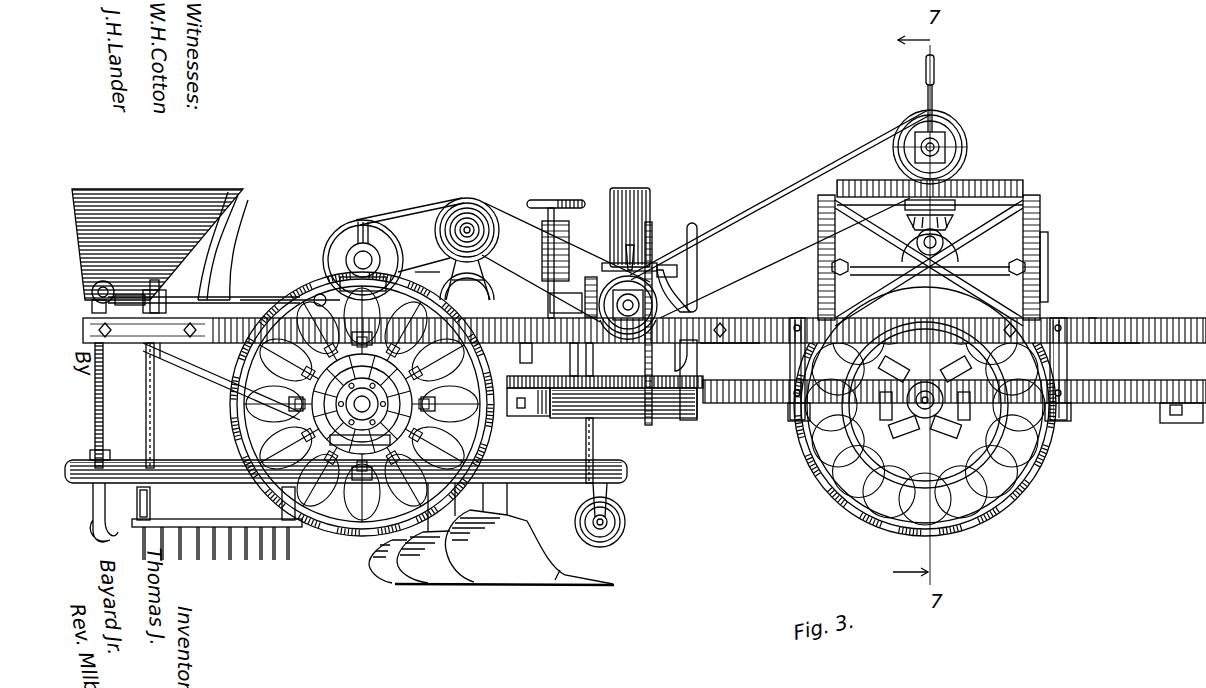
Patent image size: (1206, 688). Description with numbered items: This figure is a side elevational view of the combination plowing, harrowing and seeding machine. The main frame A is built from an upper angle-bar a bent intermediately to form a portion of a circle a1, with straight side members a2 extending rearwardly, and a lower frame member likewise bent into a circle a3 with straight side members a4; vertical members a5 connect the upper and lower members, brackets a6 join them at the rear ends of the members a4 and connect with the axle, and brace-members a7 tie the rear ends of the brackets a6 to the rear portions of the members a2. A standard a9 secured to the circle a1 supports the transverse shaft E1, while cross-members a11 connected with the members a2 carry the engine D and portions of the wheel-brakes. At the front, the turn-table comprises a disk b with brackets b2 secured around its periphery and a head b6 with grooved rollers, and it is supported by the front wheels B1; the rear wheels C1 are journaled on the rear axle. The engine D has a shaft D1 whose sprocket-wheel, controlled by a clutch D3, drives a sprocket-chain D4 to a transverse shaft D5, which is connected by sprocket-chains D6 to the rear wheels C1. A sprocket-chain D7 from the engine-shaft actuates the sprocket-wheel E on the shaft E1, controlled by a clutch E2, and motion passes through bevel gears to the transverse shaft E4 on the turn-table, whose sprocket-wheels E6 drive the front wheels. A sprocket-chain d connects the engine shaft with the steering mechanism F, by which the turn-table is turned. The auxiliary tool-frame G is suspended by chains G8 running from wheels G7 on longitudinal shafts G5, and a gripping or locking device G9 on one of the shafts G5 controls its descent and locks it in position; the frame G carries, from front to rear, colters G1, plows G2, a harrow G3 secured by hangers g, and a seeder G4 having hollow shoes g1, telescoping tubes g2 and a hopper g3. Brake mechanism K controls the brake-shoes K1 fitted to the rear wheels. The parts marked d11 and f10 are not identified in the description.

The main frame A is at (644, 313).
The upper angle-bar a is at (1094, 307).
The circle portion of upper angle-bar a1 is at (1140, 344).
The straight side members of upper frame a2 is at (725, 343).
The circle portion of lower frame member a3 is at (1138, 404).
The straight side members of lower frame a4 is at (735, 404).
The vertical members a5 is at (792, 348).
The brackets a6 is at (300, 432).
The brace-members a7 is at (222, 372).
The standard a9 is at (1044, 242).
The cross-members a11 is at (562, 346).
The disk b is at (932, 417).
The brackets b2 is at (1068, 420).
The head b6 is at (960, 215).
The front wheels B1 is at (840, 500).
The rear wheels C1 is at (348, 528).
The engine D is at (650, 210).
The engine shaft D1 is at (635, 336).
The clutch D3 is at (660, 250).
The sprocket-chain D4 is at (405, 228).
The transverse shaft D5 is at (358, 248).
The sprocket-chains D6 is at (322, 262).
The sprocket-chain D7 is at (790, 194).
The sprocket-chain d is at (525, 244).
The bracket d11 is at (676, 348).
The sprocket-wheel E is at (968, 148).
The transverse shaft E1 is at (902, 124).
The clutch E2 is at (948, 134).
The transverse shaft E4 is at (1040, 262).
The sprocket-wheels E6 is at (939, 235).
The steering mechanism F is at (482, 215).
The lever f10 is at (431, 263).
The auxiliary tool-frame G is at (172, 464).
The colters G1 is at (620, 507).
The plows G2 is at (498, 575).
The harrow G3 is at (258, 560).
The seeder G4 is at (90, 306).
The longitudinal shafts G5 is at (250, 296).
The wheels G7 is at (157, 290).
The chains G8 is at (154, 425).
The gripping or locking device G9 is at (568, 204).
The hangers g is at (150, 500).
The hollow shoes g1 is at (95, 500).
The tubes g2 is at (94, 410).
The hopper g3 is at (100, 240).
The brake mechanism K is at (698, 268).
The brake-shoes K1 is at (497, 430).